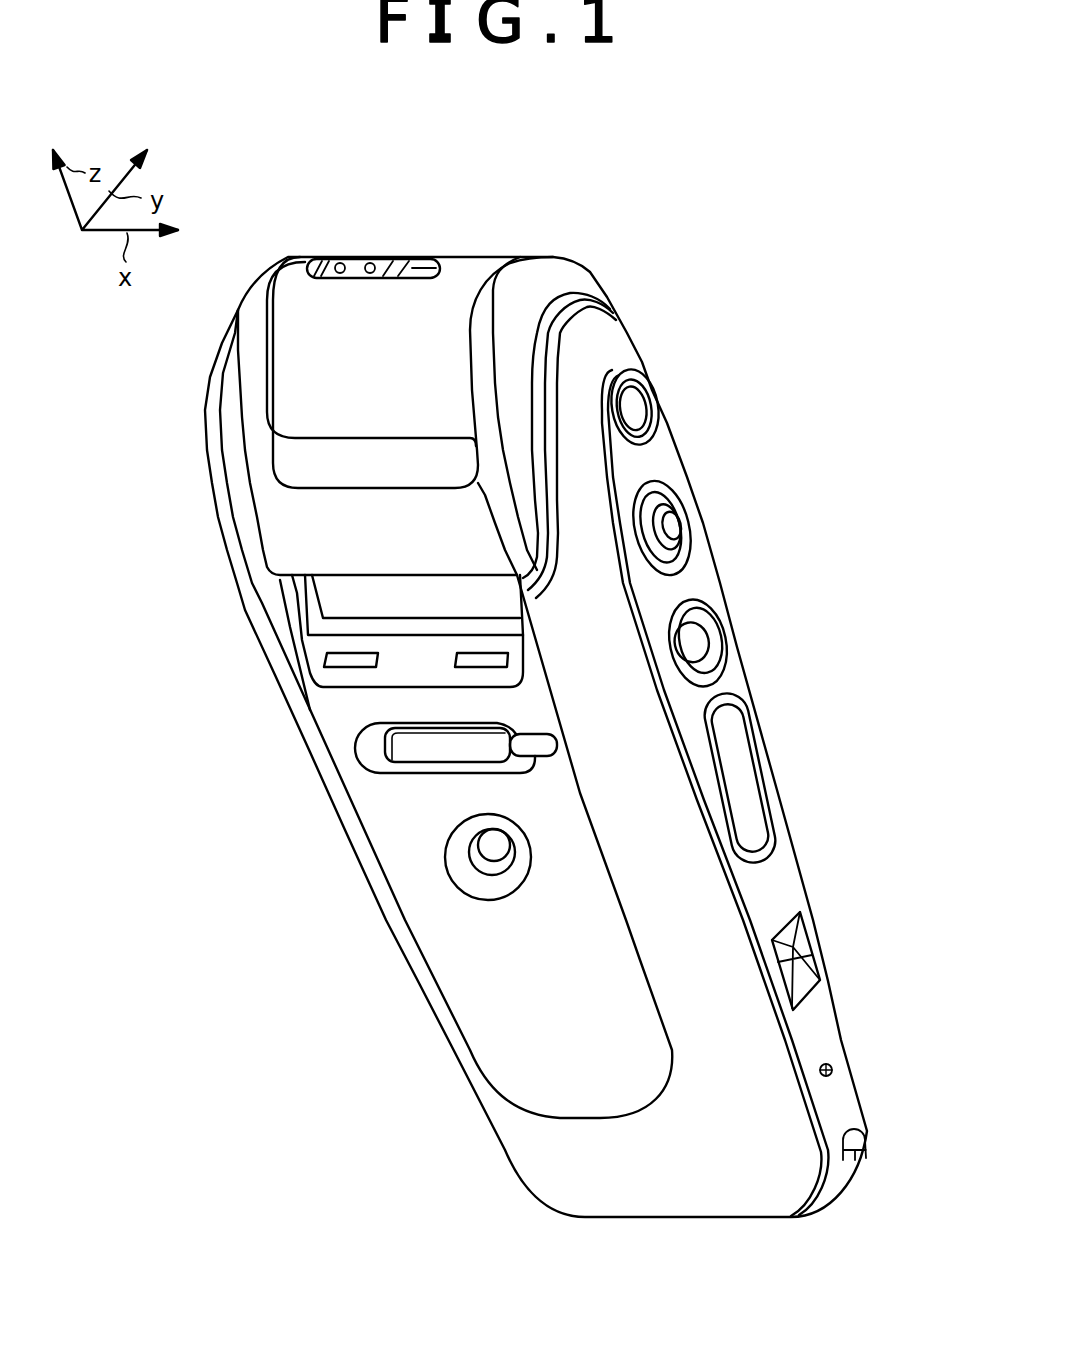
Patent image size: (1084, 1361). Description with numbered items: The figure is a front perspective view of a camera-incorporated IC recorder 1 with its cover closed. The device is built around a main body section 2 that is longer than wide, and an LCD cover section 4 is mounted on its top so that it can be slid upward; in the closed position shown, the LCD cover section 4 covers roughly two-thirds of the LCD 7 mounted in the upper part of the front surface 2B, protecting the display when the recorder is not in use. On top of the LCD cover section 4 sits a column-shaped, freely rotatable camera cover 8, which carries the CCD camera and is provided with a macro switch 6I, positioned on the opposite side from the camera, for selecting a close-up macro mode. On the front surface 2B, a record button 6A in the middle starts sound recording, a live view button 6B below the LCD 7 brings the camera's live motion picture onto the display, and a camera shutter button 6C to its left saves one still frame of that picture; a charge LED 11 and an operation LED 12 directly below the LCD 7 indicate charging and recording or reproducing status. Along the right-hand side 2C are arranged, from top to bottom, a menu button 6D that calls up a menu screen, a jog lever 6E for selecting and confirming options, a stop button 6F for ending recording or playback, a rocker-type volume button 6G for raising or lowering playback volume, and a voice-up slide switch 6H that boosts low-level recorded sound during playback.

The camera-incorporated IC recorder 1 is at (848, 1213).
The main body section 2 is at (592, 1196).
The front surface 2B is at (485, 1007).
The right-hand side 2C is at (819, 1028).
The LCD cover section 4 is at (515, 267).
The record button 6A is at (487, 857).
The live view button 6B is at (534, 748).
The camera shutter button 6C is at (402, 747).
The menu button 6D is at (636, 410).
The jog lever 6E is at (672, 524).
The stop button 6F is at (702, 640).
The volume button 6G is at (745, 783).
The voice-up switch 6H is at (808, 942).
The macro switch 6I is at (350, 258).
The LCD 7 is at (330, 596).
The camera cover 8 is at (457, 270).
The charge LED 11 is at (330, 658).
The operation LED 12 is at (457, 657).